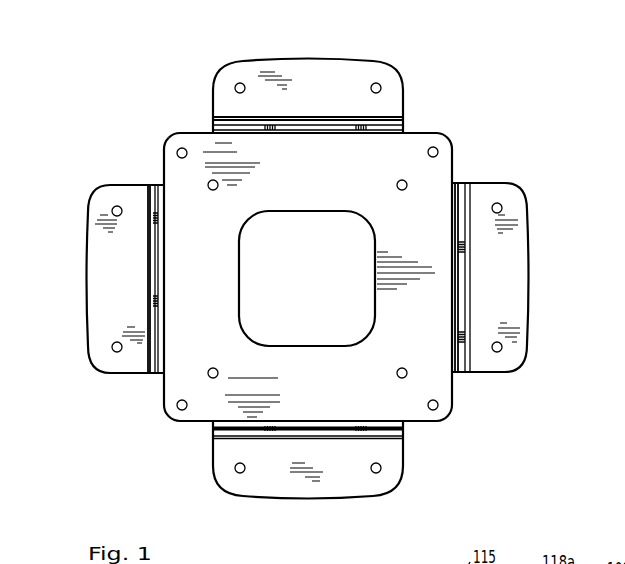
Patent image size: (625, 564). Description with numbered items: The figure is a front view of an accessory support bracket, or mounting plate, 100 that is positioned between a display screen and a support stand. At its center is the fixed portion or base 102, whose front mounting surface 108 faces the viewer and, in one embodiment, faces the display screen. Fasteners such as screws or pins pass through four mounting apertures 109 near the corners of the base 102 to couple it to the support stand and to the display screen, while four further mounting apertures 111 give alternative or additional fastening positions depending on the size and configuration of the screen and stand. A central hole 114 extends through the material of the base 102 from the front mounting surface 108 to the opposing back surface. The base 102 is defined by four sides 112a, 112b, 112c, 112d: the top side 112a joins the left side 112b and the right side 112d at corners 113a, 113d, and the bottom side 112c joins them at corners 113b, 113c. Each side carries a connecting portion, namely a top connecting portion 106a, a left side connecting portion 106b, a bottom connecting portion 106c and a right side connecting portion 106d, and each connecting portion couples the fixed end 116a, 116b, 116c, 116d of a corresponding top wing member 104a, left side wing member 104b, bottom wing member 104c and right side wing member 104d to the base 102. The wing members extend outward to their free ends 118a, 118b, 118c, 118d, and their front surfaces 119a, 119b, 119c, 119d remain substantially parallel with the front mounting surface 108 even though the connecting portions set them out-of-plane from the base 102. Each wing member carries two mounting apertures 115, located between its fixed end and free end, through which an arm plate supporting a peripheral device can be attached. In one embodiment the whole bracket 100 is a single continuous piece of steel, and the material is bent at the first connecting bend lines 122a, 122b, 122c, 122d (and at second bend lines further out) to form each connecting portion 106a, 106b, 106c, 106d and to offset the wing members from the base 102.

The accessory support bracket 100 is at (443, 43).
The base 102 is at (457, 162).
The top wing member 104a is at (363, 59).
The left side wing member 104b is at (86, 267).
The bottom wing member 104c is at (350, 498).
The right side wing member 104d is at (529, 250).
The top connecting portion 106a is at (303, 124).
The left side connecting portion 106b is at (157, 255).
The bottom connecting portion 106c is at (301, 428).
The right side connecting portion 106d is at (461, 216).
The front mounting surface 108 is at (315, 182).
The mounting apertures 109 is at (183, 159).
The mounting apertures 111 is at (216, 189).
The top side 112a is at (196, 132).
The left side 112b is at (162, 392).
The side of base 112c is at (423, 423).
The right side 112d is at (454, 389).
The corner 113a is at (166, 143).
The corner 113b is at (166, 418).
The corner 113c is at (445, 415).
The corner 113d is at (443, 136).
The central hole 114 is at (376, 317).
The mounting apertures 115 is at (239, 82).
The fixed end 116a is at (302, 126).
The fixed end 116b is at (147, 295).
The fixed end 116c is at (306, 437).
The fixed end 116d is at (469, 278).
The free end 118a is at (307, 59).
The free end 118b is at (88, 233).
The free end 118c is at (298, 499).
The free end 118d is at (528, 285).
The front surface 119a is at (348, 90).
The front surface 119b is at (141, 273).
The front surface 119c is at (286, 463).
The front surface 119d is at (513, 310).
The first connecting bend line 122a is at (300, 129).
The first connecting bend line 122b is at (164, 290).
The first connecting bend line 122c is at (281, 424).
The first connecting bend line 122d is at (454, 312).